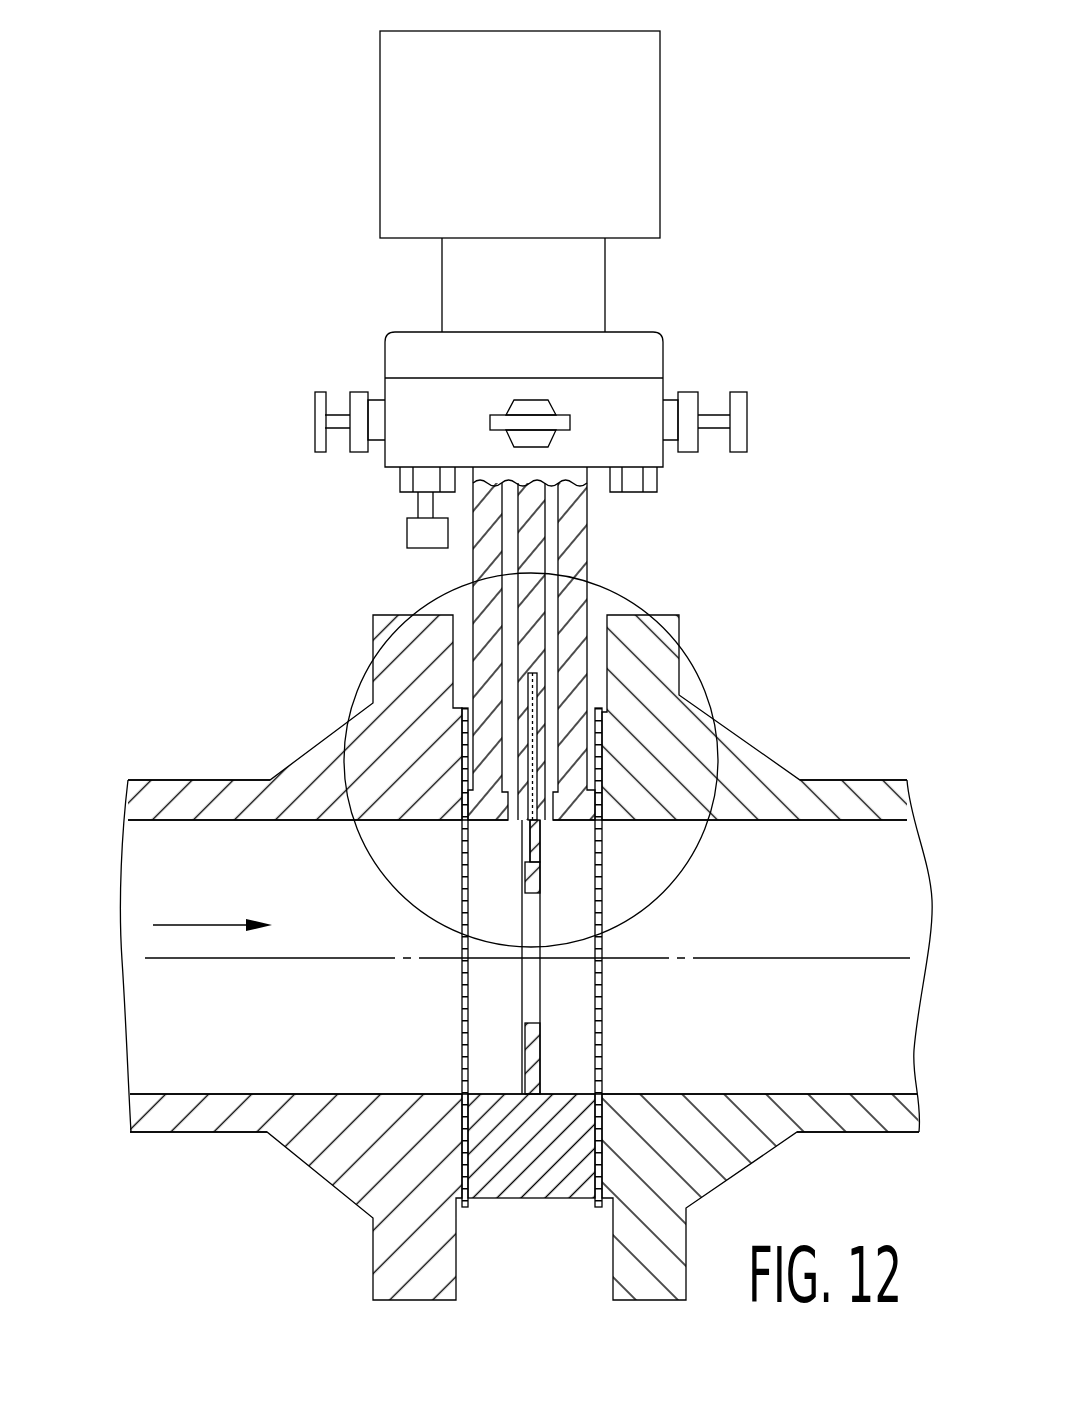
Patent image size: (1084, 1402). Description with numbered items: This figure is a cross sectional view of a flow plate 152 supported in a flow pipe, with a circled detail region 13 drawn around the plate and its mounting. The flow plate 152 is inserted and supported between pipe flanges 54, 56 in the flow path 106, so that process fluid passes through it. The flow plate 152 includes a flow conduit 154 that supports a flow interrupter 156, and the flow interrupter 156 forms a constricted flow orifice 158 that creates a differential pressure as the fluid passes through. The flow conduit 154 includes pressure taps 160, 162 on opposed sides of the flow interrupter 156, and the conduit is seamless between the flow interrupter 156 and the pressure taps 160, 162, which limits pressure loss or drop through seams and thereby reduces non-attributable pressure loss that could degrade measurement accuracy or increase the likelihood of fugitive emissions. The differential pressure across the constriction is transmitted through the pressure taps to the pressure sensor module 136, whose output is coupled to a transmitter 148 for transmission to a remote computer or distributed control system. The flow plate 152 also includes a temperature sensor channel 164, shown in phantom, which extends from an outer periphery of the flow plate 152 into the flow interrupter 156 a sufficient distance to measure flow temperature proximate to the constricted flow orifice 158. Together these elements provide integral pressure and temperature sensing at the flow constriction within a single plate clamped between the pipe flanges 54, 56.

The transmitter 148 is at (643, 124).
The pressure sensor module 136 is at (448, 285).
The temperature sensor channel 164 is at (549, 699).
The pipe flange 56 is at (678, 604).
The sensing assembly 13 is at (692, 663).
The pipe flange 54 is at (366, 621).
The flow path 106 is at (875, 776).
The flow plate 152 is at (620, 766).
The flow conduit 154 is at (578, 822).
The pressure tap 160 is at (512, 822).
The pressure tap 162 is at (543, 823).
The constricted flow orifice 158 is at (547, 986).
The flow interrupter 156 is at (542, 1048).